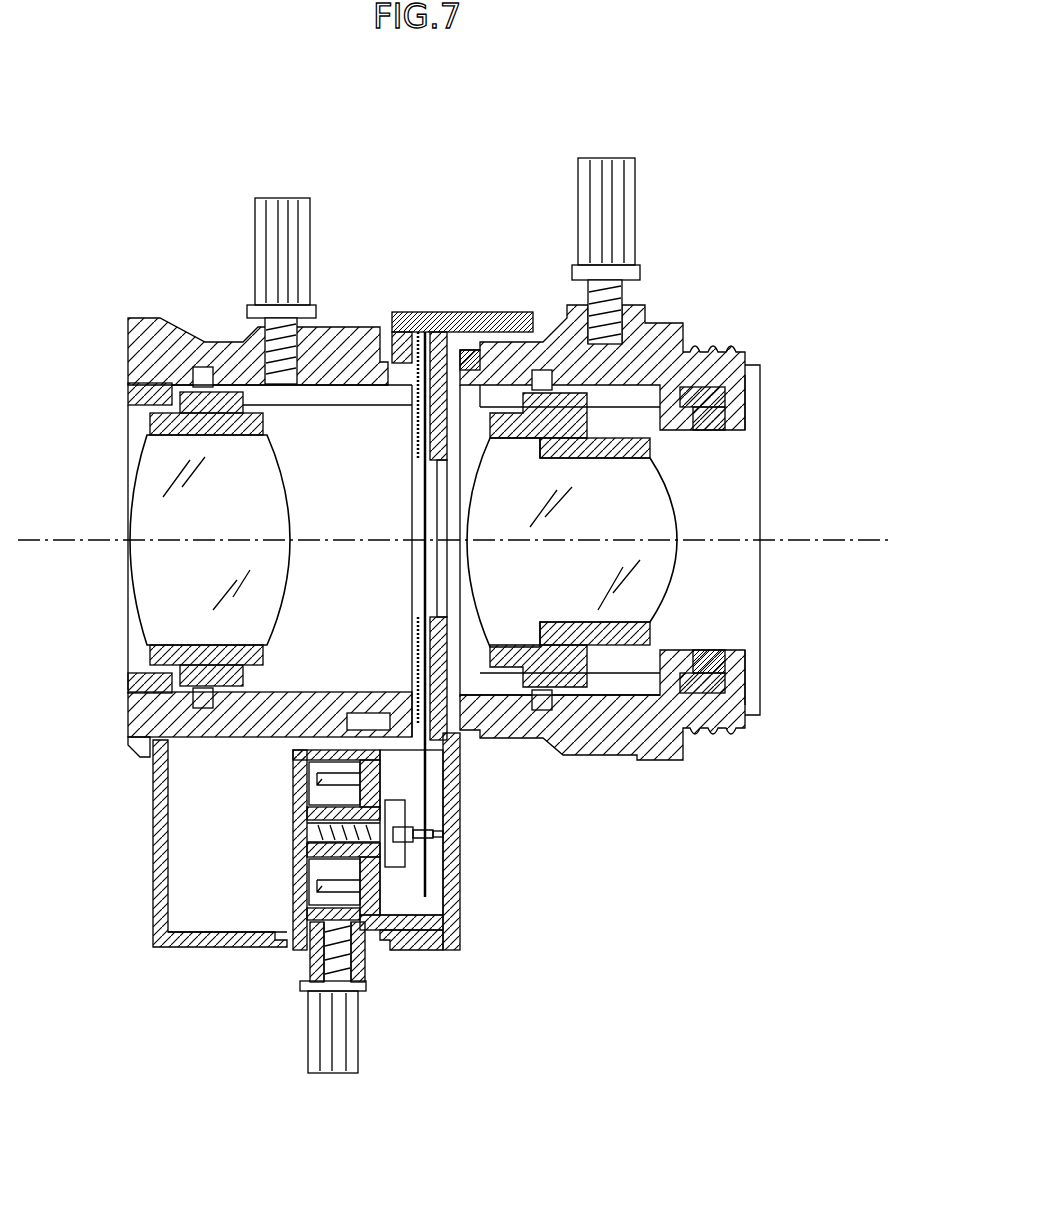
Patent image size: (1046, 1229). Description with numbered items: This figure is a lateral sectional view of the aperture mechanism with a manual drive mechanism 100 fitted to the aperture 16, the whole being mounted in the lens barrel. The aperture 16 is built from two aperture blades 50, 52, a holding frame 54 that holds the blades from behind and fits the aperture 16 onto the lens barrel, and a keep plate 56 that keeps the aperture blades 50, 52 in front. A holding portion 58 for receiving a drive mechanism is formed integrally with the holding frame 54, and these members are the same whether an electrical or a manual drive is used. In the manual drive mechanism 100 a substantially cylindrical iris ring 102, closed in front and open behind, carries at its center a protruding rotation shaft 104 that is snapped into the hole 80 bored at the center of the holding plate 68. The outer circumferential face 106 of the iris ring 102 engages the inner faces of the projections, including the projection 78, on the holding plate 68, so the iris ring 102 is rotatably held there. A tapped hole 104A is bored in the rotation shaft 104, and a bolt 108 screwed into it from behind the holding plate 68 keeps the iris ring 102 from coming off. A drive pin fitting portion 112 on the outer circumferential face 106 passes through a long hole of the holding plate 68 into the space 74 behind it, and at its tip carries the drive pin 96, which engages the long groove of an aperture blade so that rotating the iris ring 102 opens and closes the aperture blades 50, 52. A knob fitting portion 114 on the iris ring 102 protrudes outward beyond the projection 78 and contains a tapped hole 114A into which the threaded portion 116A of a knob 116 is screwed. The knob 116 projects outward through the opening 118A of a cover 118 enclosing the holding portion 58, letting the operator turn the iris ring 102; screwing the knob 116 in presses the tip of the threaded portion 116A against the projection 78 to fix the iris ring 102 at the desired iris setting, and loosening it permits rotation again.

The aperture 16 is at (398, 524).
The aperture blade 50 is at (448, 422).
The aperture blade 52 is at (418, 572).
The holding frame 54 is at (417, 407).
The keep plate 56 is at (417, 427).
The holding portion 58 is at (527, 832).
The holding plate 68 is at (445, 940).
The space 74 is at (437, 878).
The projection 78 is at (377, 933).
The hole 80 is at (392, 817).
The drive pin 96 is at (445, 836).
The manual drive mechanism 100 is at (357, 926).
The iris ring 102 is at (292, 870).
The rotation shaft 104 is at (300, 800).
The tapped hole 104A is at (445, 835).
The outer circumferential face 106 is at (300, 905).
The bolt 108 is at (397, 847).
The drive pin fitting portion 112 is at (433, 837).
The knob fitting portion 114 is at (346, 988).
The tapped hole 114A is at (367, 990).
The knob 116 is at (337, 1050).
The threaded portion 116A is at (303, 988).
The cover 118 is at (177, 878).
The opening 118A is at (295, 953).